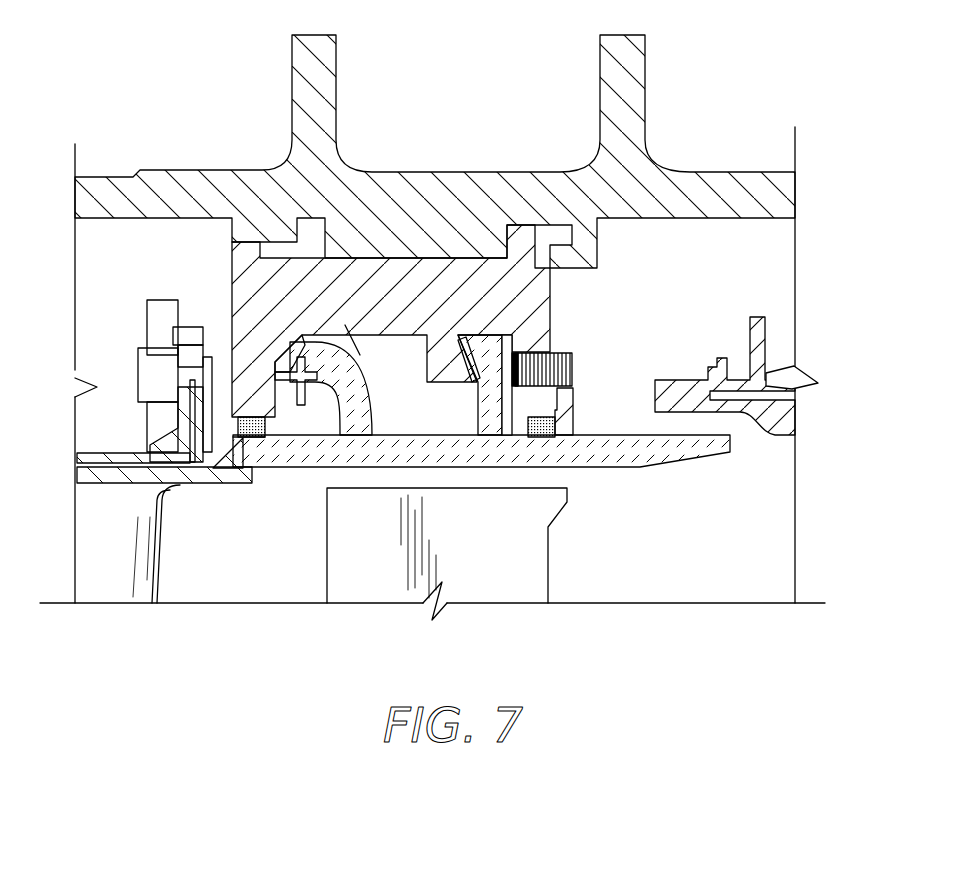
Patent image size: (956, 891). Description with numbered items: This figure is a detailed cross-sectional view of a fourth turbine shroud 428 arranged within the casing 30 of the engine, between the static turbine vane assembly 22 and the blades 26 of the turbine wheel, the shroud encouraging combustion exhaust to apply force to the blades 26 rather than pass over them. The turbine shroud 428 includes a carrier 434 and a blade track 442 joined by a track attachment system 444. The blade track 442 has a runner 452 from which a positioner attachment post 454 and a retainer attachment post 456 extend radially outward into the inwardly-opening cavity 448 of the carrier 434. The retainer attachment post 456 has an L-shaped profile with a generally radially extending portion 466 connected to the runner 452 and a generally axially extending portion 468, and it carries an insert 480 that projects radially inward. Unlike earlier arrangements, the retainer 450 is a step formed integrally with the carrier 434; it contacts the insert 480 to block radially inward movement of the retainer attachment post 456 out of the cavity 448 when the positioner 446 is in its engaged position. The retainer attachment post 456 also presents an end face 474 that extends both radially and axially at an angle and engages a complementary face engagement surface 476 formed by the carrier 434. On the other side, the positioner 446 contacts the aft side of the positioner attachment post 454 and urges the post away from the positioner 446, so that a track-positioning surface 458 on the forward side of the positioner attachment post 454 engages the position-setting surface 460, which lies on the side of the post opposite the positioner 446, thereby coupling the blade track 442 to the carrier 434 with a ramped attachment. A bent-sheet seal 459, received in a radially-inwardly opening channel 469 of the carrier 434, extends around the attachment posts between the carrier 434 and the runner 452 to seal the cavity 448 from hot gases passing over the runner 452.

The static turbine vane assembly 22 is at (146, 568).
The blades 26 is at (520, 593).
The casing 30 is at (742, 190).
The turbine shroud 428 is at (200, 270).
The carrier 434 is at (408, 290).
The blade track 442 is at (666, 456).
The track attachment system 444 is at (614, 350).
The positioner 446 is at (518, 356).
The cavity 448 is at (449, 358).
The retainer 450 is at (310, 392).
The runner 452 is at (601, 455).
The positioner attachment post 454 is at (493, 441).
The retainer attachment post 456 is at (356, 425).
The track-positioning surface 458 is at (563, 290).
The bent-sheet seal 459 is at (250, 442).
The position-setting surface 460 is at (488, 352).
The generally radially extending portion 466 is at (376, 403).
The generally axially extending portion 468 is at (360, 356).
The radially-inwardly opening channel 469 is at (236, 432).
The end face 474 is at (332, 357).
The face engagement surface 476 is at (288, 338).
The insert 480 is at (296, 384).